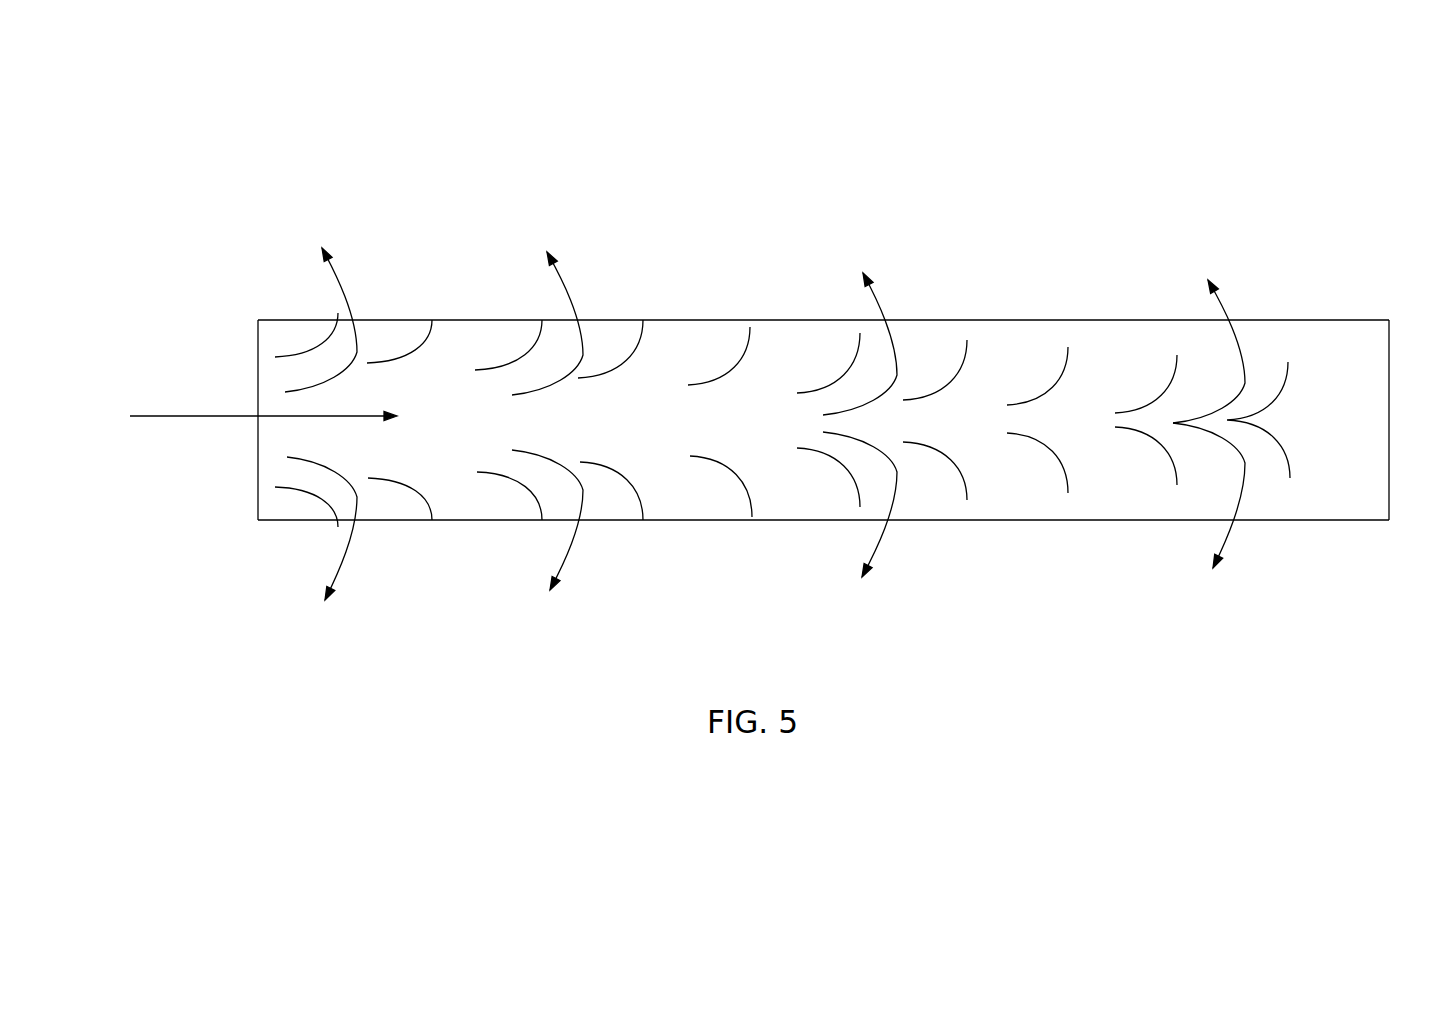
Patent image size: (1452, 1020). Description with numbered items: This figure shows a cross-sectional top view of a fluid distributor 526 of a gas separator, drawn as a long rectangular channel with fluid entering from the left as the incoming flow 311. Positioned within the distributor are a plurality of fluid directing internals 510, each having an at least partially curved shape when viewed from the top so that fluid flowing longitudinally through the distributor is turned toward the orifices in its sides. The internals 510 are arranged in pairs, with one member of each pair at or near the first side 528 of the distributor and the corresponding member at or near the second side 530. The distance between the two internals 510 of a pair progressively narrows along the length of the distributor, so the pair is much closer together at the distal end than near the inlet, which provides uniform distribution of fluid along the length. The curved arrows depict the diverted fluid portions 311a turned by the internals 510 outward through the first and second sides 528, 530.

The inlet flow 311 is at (178, 417).
The diverted flow portions 311a is at (585, 483).
The fluid directing internals 510 is at (424, 485).
The duct housing 526 is at (847, 401).
The first side 528 is at (1105, 318).
The second side 530 is at (1098, 520).